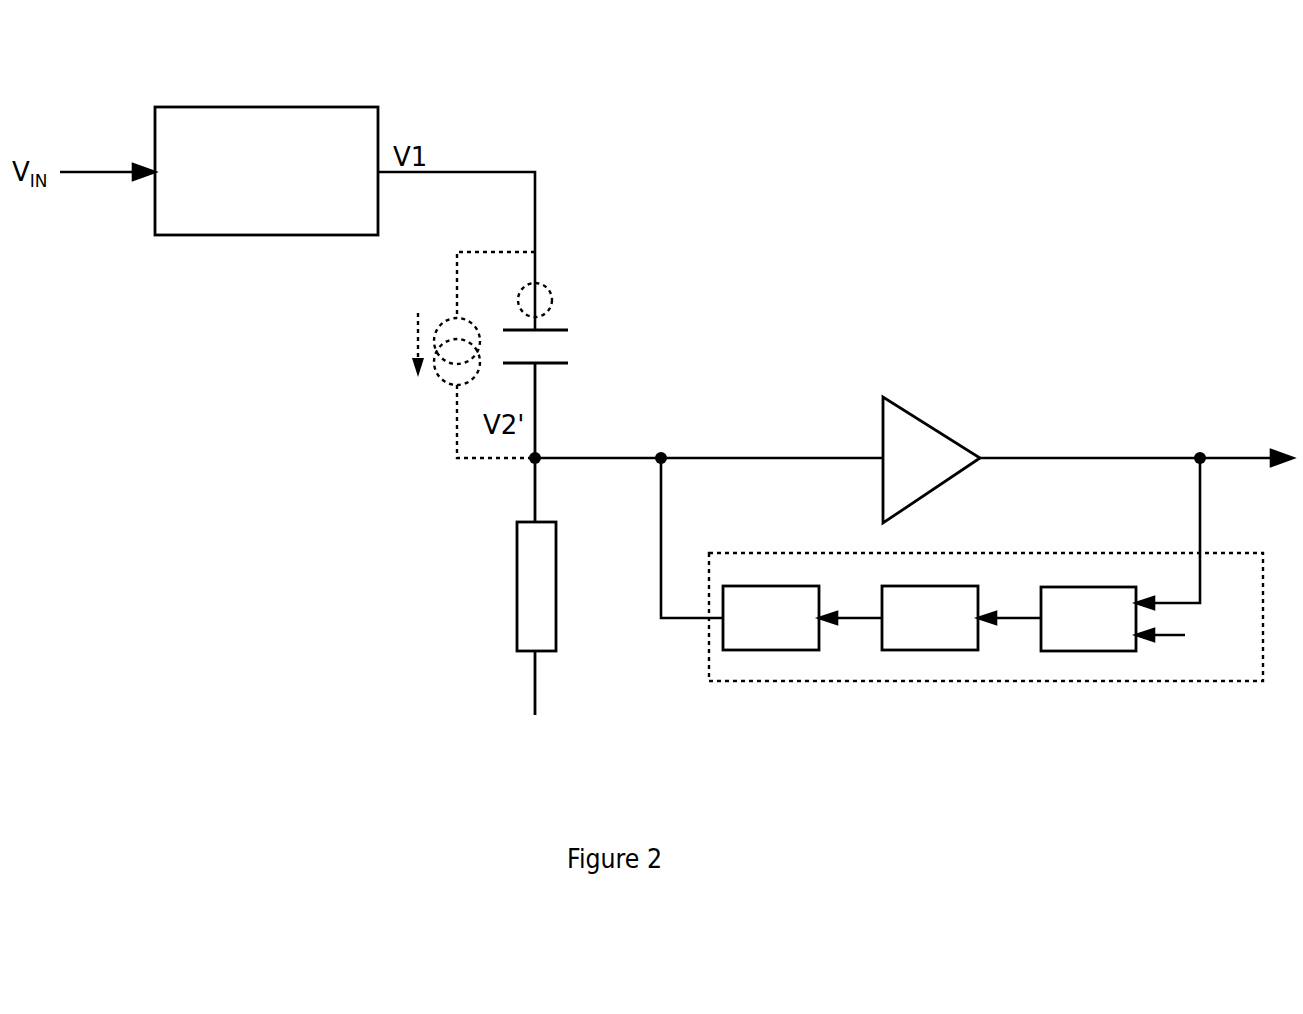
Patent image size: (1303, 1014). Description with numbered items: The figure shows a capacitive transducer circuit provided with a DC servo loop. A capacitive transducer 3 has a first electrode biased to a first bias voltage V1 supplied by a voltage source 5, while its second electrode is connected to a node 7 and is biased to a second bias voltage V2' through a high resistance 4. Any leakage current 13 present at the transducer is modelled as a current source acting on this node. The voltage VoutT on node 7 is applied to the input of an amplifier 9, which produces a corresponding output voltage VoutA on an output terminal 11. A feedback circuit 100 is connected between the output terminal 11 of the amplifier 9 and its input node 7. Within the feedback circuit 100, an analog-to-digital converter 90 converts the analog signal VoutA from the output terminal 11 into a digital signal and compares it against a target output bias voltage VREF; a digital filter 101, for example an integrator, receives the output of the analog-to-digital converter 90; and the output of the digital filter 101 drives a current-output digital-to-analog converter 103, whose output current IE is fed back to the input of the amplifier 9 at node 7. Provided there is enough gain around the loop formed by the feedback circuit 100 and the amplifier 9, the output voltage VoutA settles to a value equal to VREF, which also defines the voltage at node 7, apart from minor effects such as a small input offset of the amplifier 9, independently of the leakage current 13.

The voltage source 5 is at (275, 106).
The capacitive transducer 3 is at (571, 348).
The leakage current 13 is at (437, 385).
The node 7 is at (630, 474).
The high resistance 4 is at (510, 593).
The amplifier 9 is at (923, 413).
The output terminal 11 is at (1262, 447).
The feedback circuit 100 is at (727, 686).
The current-output digital-to-analog converter 103 is at (758, 652).
The digital filter 101 is at (930, 652).
The analog-to-digital converter 90 is at (1091, 652).